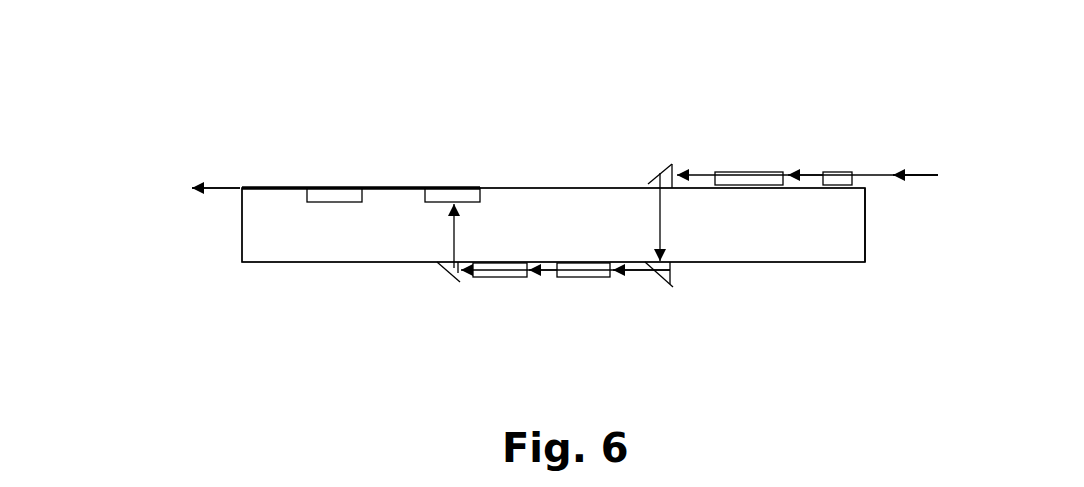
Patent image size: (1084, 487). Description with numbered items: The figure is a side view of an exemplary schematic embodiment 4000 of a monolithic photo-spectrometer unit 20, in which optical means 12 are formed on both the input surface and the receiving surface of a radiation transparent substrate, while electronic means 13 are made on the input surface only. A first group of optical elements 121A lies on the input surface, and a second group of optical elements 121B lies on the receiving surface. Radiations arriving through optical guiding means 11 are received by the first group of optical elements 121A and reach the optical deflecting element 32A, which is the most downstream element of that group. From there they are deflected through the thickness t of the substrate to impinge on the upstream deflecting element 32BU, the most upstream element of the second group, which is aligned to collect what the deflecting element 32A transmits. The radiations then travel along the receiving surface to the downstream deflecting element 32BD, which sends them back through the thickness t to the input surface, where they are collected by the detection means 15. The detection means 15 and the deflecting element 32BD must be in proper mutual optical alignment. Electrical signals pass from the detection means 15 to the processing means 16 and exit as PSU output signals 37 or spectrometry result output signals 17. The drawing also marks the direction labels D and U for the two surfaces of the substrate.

The exemplary schematic embodiment 4000 is at (847, 68).
The monolithic photo-spectrometer unit 20 is at (607, 102).
The electronic means 13 is at (397, 132).
The processing means 16 is at (327, 187).
The detection means 15 is at (456, 161).
The spectrometry result output signals 17 is at (297, 161).
The PSU output signals 37 is at (220, 187).
The optical means 12 is at (694, 207).
The first group of optical elements 121A is at (786, 127).
The second group of optical elements 121B is at (670, 290).
The optical guiding means 11 is at (807, 141).
The optical deflecting element 32A is at (658, 173).
The downstream deflecting element 32BD is at (445, 268).
The upstream deflecting element 32BU is at (668, 285).
The downward direction D is at (242, 148).
The upward direction U is at (883, 105).
The thickness t is at (877, 188).